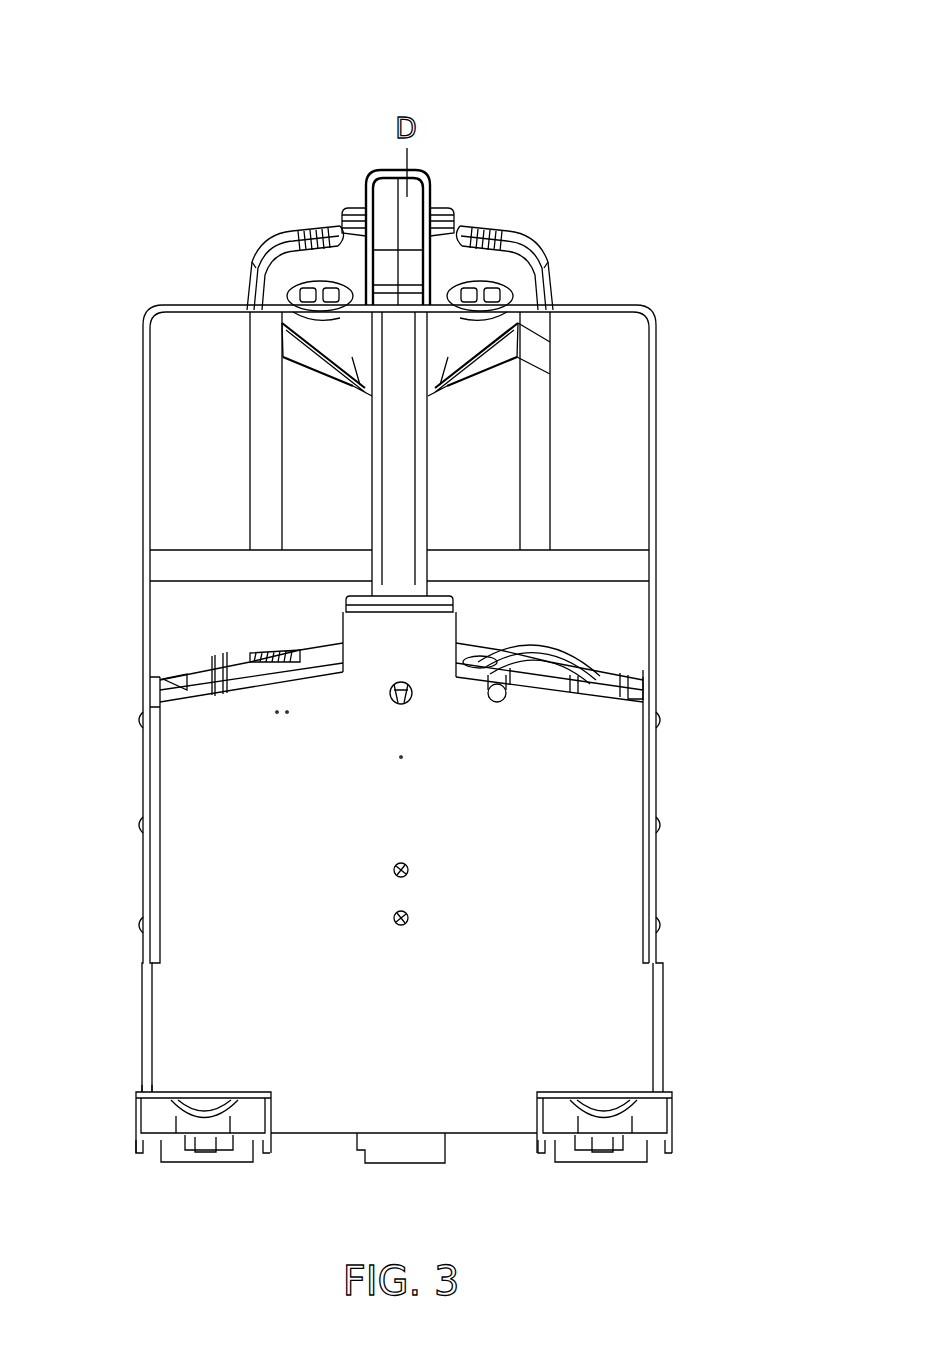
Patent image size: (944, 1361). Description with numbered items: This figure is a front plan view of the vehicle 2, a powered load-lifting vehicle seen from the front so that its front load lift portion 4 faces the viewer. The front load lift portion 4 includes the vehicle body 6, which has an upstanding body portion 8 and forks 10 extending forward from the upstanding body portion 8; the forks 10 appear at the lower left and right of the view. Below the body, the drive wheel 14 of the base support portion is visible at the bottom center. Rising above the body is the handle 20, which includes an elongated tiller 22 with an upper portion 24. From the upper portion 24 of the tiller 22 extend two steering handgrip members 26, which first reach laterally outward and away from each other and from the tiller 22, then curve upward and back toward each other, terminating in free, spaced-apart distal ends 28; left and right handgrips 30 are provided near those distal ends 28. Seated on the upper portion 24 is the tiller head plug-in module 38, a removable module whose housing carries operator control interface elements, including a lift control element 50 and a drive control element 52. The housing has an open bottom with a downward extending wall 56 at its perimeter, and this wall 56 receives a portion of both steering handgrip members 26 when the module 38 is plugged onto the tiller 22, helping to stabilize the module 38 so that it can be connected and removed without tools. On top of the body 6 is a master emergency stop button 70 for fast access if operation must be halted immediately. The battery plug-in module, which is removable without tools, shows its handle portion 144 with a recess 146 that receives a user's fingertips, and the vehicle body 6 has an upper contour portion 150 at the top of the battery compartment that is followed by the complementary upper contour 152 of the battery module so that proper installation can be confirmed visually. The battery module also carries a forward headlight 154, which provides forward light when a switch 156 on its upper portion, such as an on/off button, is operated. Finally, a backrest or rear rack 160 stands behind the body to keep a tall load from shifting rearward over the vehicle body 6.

The vehicle 2 is at (172, 103).
The front load lift portion 4 is at (140, 1090).
The vehicle body 6 is at (142, 980).
The upstanding body portion 8 is at (205, 765).
The forks 10 is at (160, 1128).
The drive wheel 14 is at (430, 1148).
The handle 20 is at (370, 523).
The elongated tiller 22 is at (370, 478).
The upper portion 24 is at (370, 417).
The steering handgrip member 26 is at (256, 262).
The distal ends 28 is at (325, 222).
The handgrips 30 is at (302, 237).
The tiller head plug-in module 38 is at (380, 168).
The lift control element 50 is at (300, 290).
The drive control element 52 is at (352, 207).
The downward extending wall 56 is at (458, 350).
The master emergency stop button 70 is at (283, 655).
The handle portion 144 is at (600, 653).
The recess 146 is at (592, 690).
The upper contour portion 150 is at (652, 685).
The upper contour 152 is at (645, 663).
The forward headlight 154 is at (500, 703).
The switch 156 is at (518, 643).
The rear rack 160 is at (652, 357).